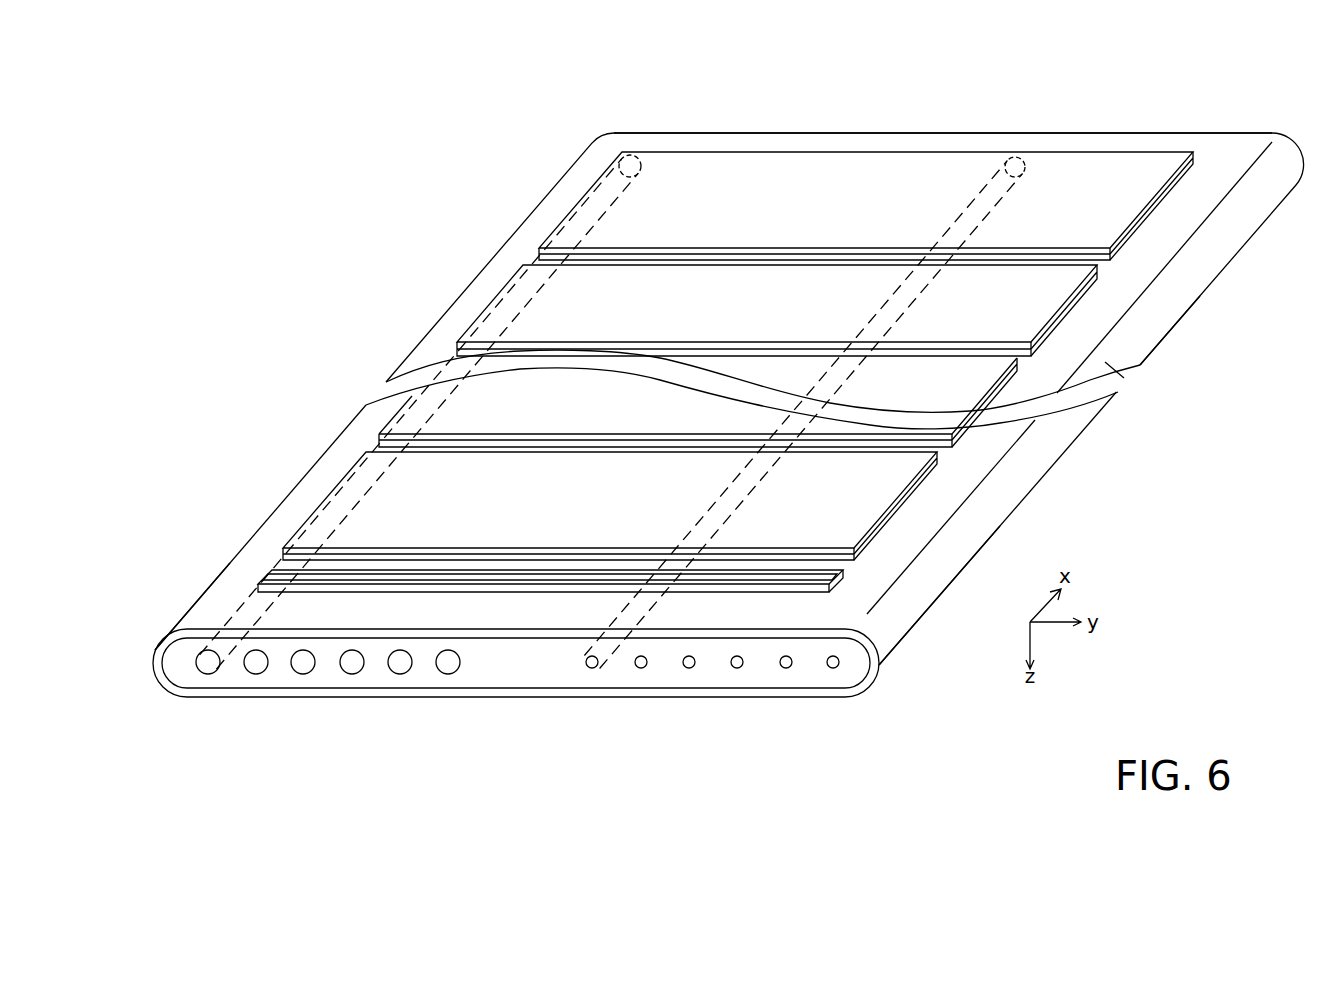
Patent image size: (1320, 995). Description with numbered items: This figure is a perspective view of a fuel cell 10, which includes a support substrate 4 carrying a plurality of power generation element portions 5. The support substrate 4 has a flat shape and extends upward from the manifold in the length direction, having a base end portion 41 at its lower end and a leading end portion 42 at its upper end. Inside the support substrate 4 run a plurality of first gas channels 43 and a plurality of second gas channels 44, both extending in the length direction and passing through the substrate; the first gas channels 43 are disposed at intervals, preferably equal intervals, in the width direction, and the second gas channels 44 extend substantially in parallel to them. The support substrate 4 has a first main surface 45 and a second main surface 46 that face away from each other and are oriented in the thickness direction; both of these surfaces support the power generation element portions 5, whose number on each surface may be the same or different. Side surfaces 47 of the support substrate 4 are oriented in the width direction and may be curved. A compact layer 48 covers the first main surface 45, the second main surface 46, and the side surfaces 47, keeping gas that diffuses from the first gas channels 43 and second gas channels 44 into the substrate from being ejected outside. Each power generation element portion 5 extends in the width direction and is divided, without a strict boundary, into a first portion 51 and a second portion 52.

The fuel cell 10 is at (862, 110).
The support substrate 4 is at (492, 675).
The base end portion 41 is at (213, 625).
The leading end portion 42 is at (660, 138).
The first gas channels 43 is at (208, 674).
The second gas channels 44 is at (592, 668).
The first main surface 45 is at (1145, 252).
The second main surface 46 is at (1107, 363).
The side surfaces 47 is at (1067, 430).
The compact layer 48 is at (305, 695).
The power generation element portions 5 is at (572, 305).
The first portion 51 is at (680, 197).
The second portion 52 is at (977, 197).